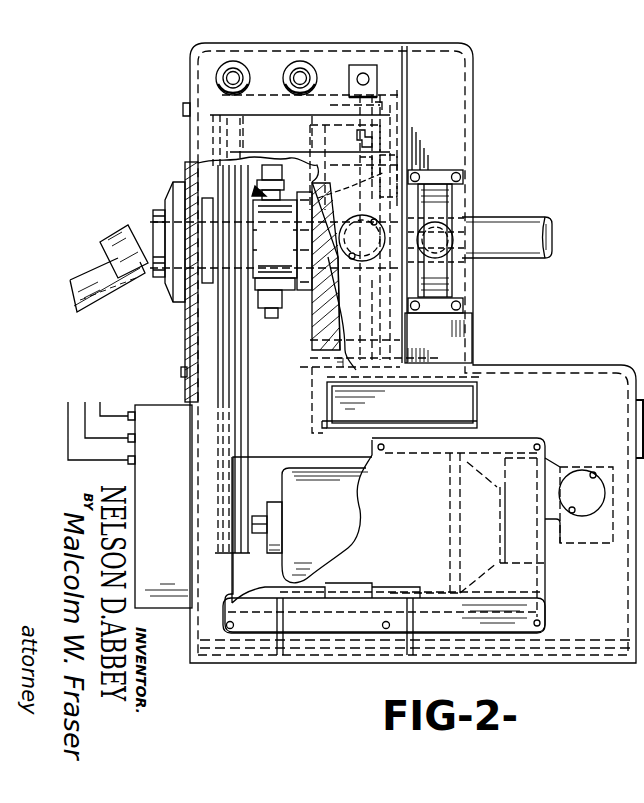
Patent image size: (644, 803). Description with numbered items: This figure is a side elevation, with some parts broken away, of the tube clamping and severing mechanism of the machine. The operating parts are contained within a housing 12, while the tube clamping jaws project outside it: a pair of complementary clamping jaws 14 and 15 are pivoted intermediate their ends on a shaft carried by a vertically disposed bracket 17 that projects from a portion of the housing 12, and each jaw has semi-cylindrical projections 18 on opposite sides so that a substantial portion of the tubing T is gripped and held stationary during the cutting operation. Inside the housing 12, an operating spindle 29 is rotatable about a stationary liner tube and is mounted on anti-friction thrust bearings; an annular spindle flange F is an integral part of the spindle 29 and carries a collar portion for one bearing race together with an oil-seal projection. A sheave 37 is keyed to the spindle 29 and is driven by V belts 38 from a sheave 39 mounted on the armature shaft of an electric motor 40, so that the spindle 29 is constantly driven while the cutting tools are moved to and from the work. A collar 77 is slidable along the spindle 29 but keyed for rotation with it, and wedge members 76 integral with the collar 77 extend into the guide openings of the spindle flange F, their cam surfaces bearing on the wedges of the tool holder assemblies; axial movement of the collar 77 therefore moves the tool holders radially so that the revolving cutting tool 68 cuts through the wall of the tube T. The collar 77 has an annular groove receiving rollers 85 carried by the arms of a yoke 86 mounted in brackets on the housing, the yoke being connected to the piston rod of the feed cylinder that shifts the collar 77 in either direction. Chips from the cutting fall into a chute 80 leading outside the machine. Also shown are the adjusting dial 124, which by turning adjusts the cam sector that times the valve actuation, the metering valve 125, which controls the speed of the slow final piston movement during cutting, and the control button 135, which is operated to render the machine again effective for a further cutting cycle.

The housing 12 is at (473, 121).
The clamping jaw 14 is at (445, 200).
The clamping jaw 15 is at (455, 288).
The bracket 17 is at (635, 375).
The semi-cylindrical projections 18 is at (455, 220).
The tubing T is at (546, 238).
The operating spindle 29 is at (178, 215).
The sheave 37 is at (244, 350).
The V belts 38 is at (226, 372).
The sheave 39 is at (255, 528).
The electric motor 40 is at (355, 500).
The cutting tool 68 is at (428, 314).
The wedge member 76 is at (282, 264).
The collar 77 is at (258, 284).
The chute 80 is at (468, 412).
The spindle flange F is at (378, 350).
The rollers 85 is at (255, 192).
The yoke 86 is at (270, 178).
The adjusting dial 124 is at (299, 60).
The metering valve 125 is at (216, 78).
The control button 135 is at (361, 64).